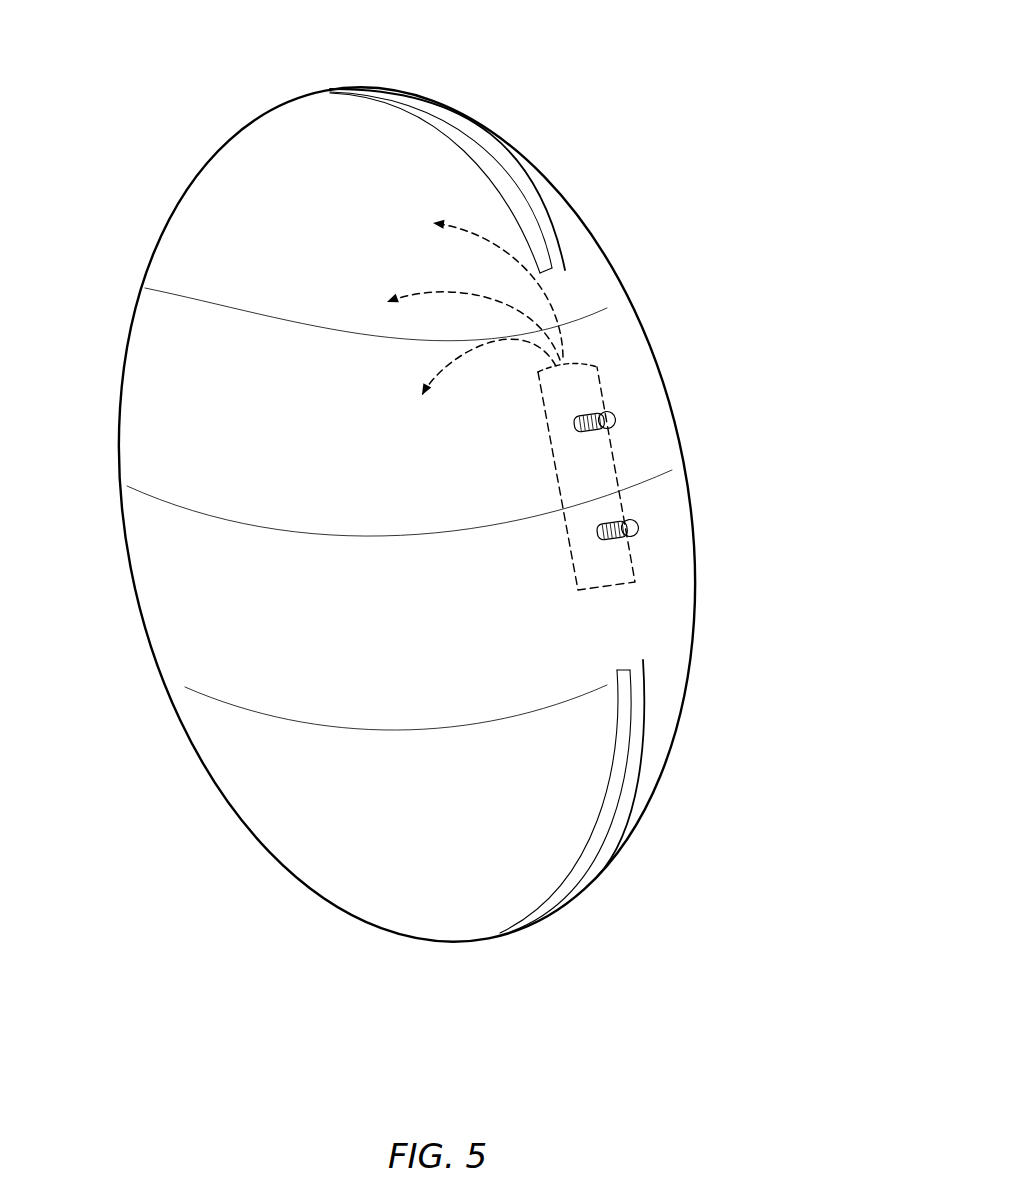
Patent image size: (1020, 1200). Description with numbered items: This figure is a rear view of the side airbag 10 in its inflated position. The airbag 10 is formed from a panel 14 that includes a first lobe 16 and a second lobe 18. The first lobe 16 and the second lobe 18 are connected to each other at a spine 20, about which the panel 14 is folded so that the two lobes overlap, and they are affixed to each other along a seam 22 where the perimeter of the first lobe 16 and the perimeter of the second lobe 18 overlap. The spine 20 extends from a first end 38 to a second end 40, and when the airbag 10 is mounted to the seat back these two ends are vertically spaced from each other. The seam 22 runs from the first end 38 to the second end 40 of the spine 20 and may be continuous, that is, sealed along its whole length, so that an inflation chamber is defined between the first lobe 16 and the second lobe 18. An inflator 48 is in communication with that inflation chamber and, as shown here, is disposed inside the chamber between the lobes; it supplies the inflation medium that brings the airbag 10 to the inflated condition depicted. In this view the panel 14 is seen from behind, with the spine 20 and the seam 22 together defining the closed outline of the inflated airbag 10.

The airbag 10 is at (738, 62).
The panel 14 is at (350, 843).
The first lobe 16 is at (157, 410).
The second lobe 18 is at (630, 360).
The spine 20 is at (620, 628).
The seam 22 is at (552, 232).
The first end 38 is at (557, 272).
The second end 40 is at (636, 662).
The inflator 48 is at (613, 453).